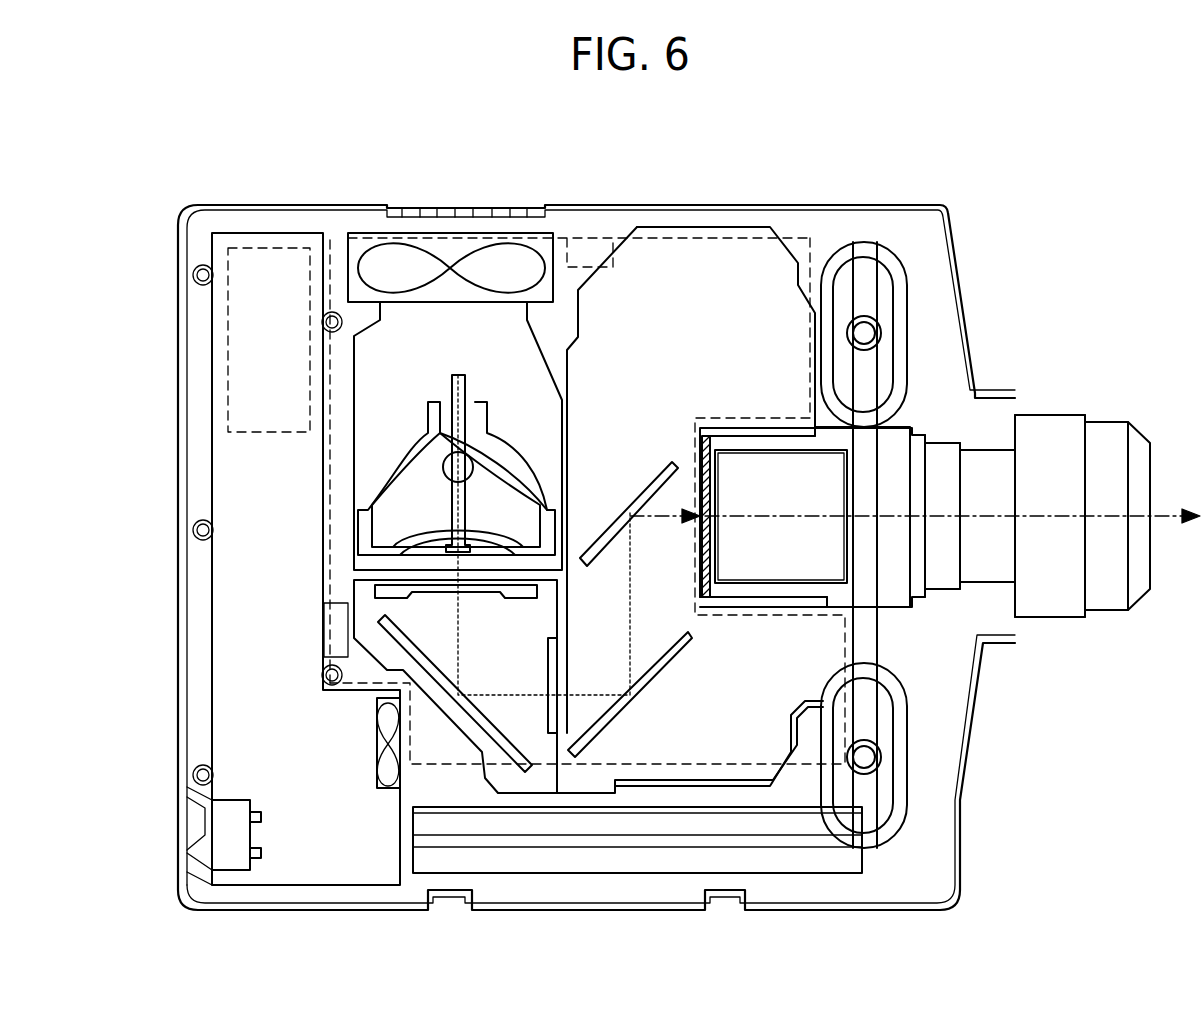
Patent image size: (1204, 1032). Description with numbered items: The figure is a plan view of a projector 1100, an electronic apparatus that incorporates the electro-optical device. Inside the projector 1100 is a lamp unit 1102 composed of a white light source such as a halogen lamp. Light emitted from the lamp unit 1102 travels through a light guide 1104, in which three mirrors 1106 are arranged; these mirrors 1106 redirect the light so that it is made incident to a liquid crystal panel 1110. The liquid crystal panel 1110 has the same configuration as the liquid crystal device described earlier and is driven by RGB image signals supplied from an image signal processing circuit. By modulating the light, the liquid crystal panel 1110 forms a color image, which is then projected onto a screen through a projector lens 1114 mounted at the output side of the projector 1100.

The projector 1100 is at (966, 210).
The lamp unit 1102 is at (507, 360).
The light guide 1104 is at (600, 267).
The mirrors 1106 is at (398, 650).
The liquid crystal panel 1110 is at (697, 481).
The projector lens 1114 is at (1117, 428).